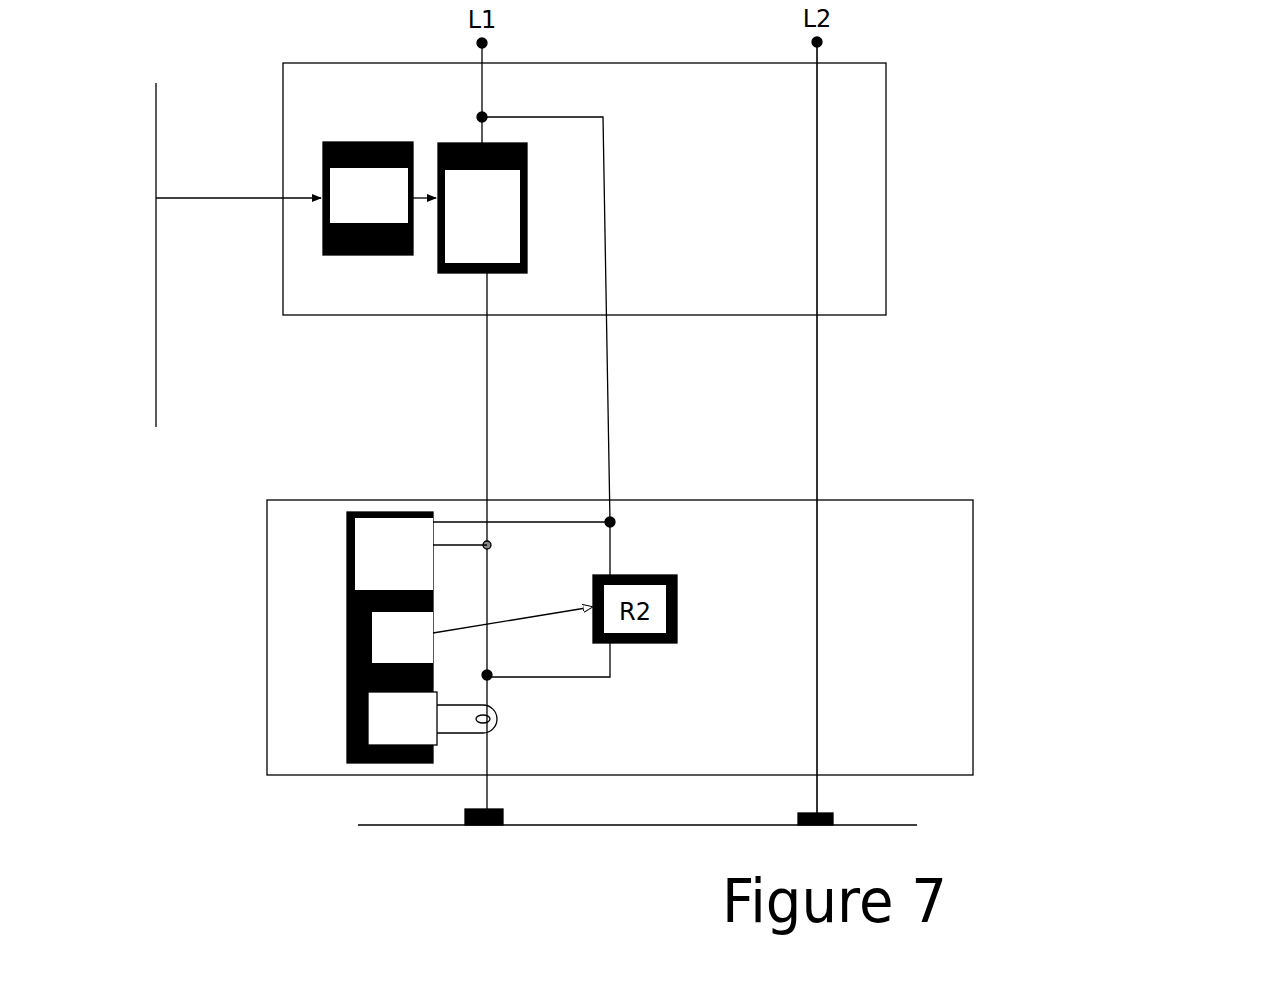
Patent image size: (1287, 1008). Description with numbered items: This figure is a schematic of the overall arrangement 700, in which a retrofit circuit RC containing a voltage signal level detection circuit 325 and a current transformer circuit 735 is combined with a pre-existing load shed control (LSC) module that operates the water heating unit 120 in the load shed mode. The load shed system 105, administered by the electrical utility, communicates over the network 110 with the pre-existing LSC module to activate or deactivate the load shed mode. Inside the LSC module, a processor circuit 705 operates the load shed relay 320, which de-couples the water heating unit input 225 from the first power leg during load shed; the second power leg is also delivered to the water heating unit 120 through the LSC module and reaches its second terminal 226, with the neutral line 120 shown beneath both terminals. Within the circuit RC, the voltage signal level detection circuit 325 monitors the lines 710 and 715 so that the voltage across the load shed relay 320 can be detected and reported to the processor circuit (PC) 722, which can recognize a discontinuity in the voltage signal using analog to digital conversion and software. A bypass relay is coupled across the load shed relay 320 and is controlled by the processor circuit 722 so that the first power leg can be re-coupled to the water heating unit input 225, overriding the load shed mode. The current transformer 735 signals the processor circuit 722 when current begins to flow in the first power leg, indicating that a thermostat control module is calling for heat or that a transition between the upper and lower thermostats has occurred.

The load shed system architecture 700 is at (767, 419).
The network 110 is at (156, 236).
The load shed system 105 is at (238, 203).
The processor circuit 705 is at (379, 198).
The load shed relay 320 is at (482, 208).
The line 715 is at (484, 386).
The line 710 is at (612, 386).
The voltage signal level detection circuit 325 is at (344, 545).
The processor circuit 722 is at (344, 640).
The current transformer circuit 735 is at (344, 714).
The water heating unit 120 is at (637, 843).
The water heating unit input 225 is at (449, 814).
The line 2 terminal 226 is at (848, 814).